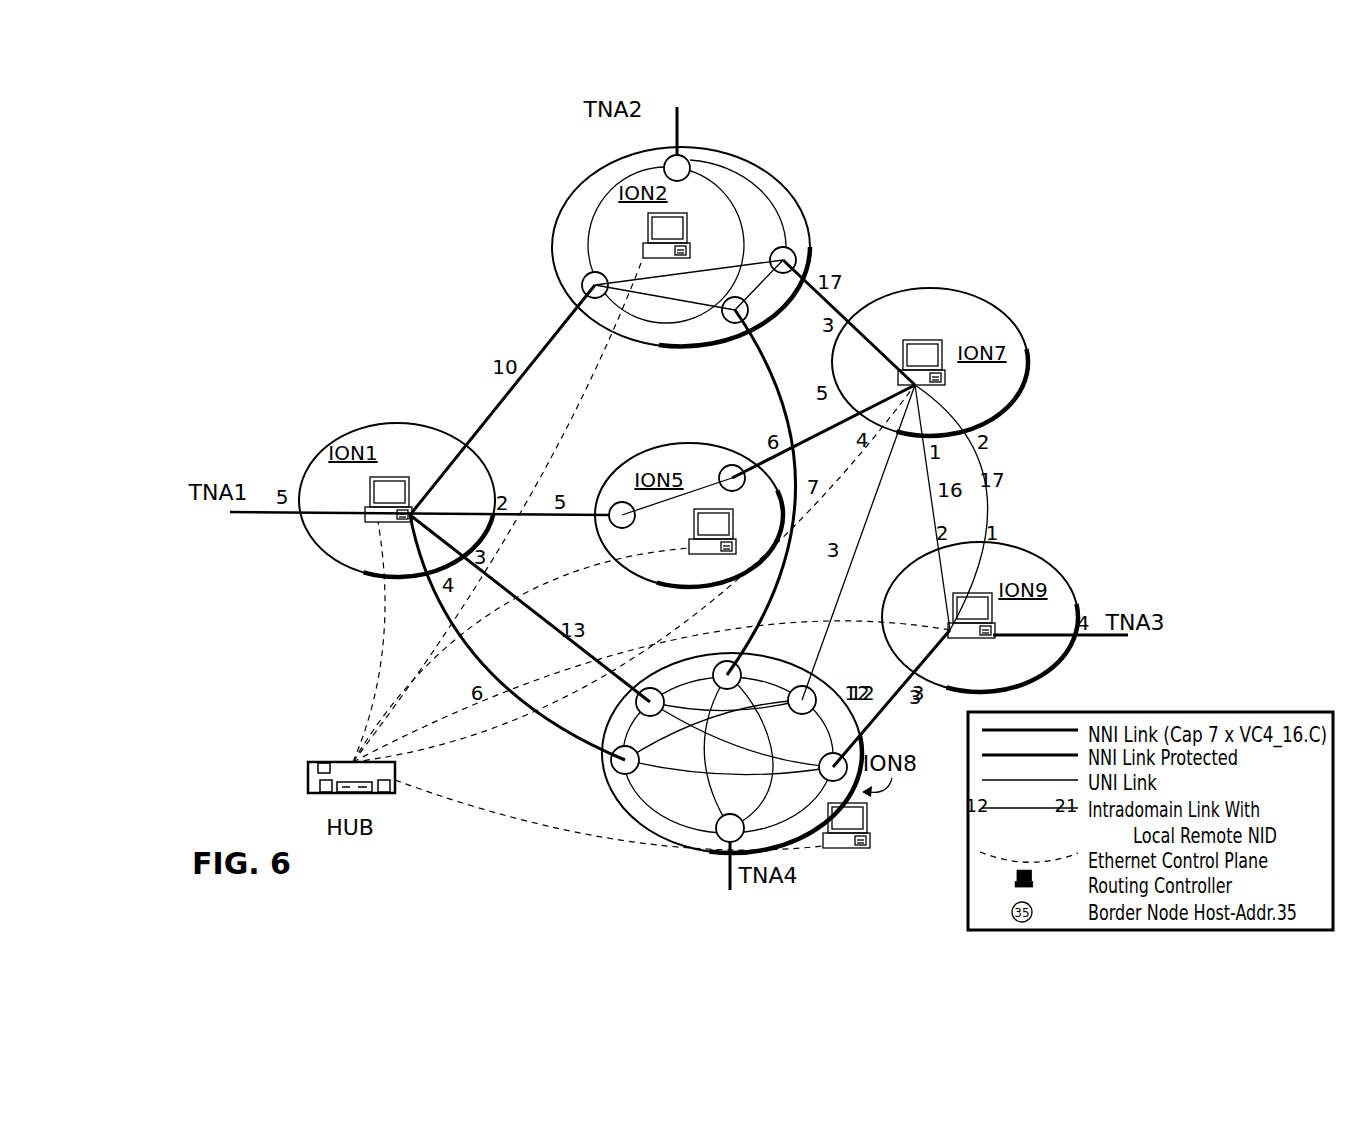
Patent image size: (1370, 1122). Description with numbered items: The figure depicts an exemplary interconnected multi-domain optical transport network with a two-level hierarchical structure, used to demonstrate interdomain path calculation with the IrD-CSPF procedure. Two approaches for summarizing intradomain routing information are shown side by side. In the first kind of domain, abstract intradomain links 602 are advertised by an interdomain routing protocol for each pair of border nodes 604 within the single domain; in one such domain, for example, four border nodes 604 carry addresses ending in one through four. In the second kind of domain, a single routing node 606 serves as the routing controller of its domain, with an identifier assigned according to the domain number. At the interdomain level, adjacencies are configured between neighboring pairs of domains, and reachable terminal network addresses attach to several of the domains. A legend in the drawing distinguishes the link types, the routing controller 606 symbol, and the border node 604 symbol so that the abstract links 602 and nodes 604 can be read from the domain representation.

The abstract IaD link 602 is at (717, 197).
The border node 604 is at (680, 152).
The routing node 606 is at (643, 247).